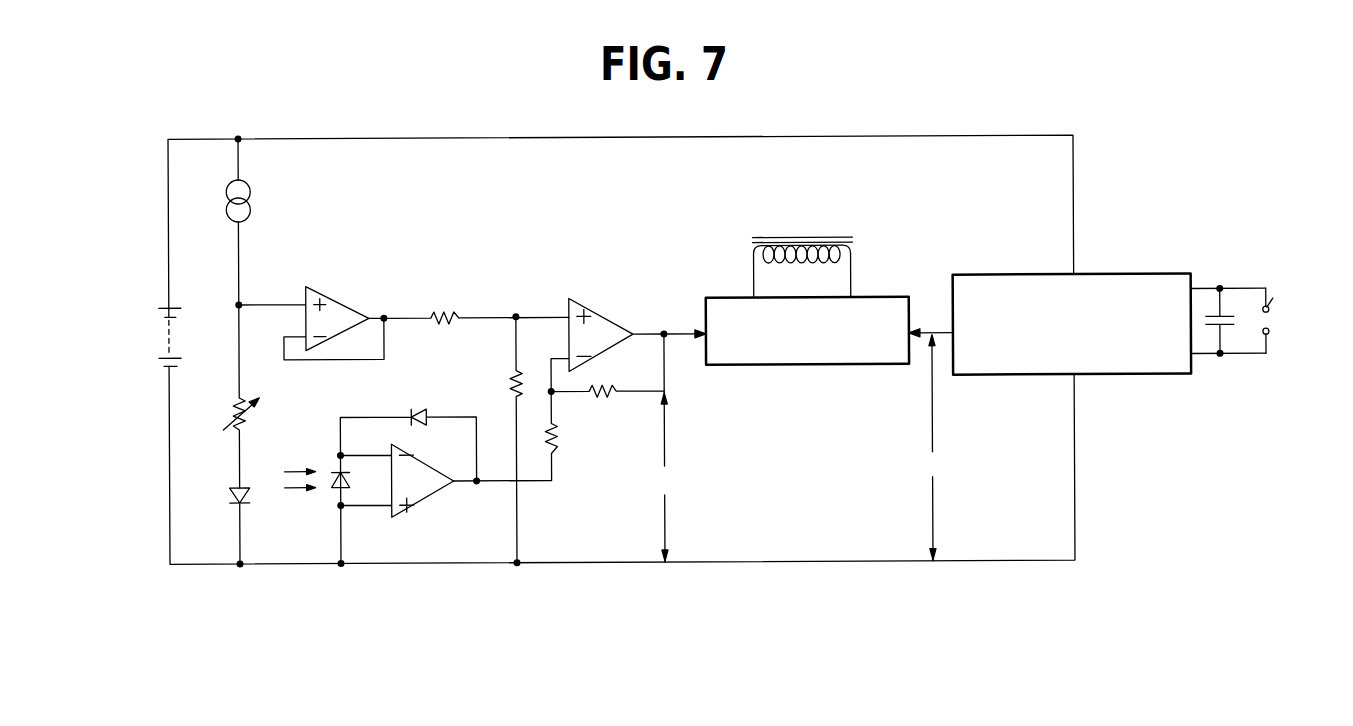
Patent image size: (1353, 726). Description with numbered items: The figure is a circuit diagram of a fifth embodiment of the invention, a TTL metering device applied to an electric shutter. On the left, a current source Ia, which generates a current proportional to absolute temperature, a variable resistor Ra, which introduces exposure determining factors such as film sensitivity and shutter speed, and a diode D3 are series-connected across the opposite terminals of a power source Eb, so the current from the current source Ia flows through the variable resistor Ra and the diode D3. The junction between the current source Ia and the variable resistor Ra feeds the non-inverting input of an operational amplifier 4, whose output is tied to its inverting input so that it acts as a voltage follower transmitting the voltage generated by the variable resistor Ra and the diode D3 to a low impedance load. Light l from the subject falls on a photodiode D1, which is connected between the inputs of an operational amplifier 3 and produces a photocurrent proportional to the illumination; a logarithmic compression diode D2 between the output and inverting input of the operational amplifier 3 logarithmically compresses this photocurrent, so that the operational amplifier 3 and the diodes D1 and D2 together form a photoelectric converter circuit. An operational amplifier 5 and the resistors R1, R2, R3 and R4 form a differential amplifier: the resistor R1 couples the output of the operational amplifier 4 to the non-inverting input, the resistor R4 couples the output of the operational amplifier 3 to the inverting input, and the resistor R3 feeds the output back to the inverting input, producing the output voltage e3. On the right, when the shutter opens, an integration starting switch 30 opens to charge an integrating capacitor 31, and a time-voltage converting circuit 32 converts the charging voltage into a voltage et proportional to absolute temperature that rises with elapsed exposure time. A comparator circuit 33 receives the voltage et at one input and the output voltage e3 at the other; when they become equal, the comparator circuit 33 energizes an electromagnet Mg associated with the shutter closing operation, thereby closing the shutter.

The current source Ia is at (250, 191).
The power source Eb is at (180, 362).
The variable resistor Ra is at (250, 420).
The diode D3 is at (228, 498).
The photodiode D1 is at (348, 480).
The logarithmic compression diode D2 is at (418, 410).
The resistor R1 is at (442, 312).
The resistor R2 is at (508, 381).
The resistor R3 is at (598, 398).
The resistor R4 is at (556, 442).
The operational amplifier 3 is at (420, 503).
The operational amplifier 4 is at (340, 300).
The operational amplifier 5 is at (605, 320).
The comparator circuit 33 is at (790, 369).
The time-voltage converting circuit 32 is at (1128, 278).
The integrating capacitor 31 is at (1233, 327).
The integration starting switch 30 is at (1268, 333).
The electromagnet Mg is at (802, 250).
The output voltage e3 is at (661, 476).
The time voltage et is at (928, 448).
The light l is at (290, 488).